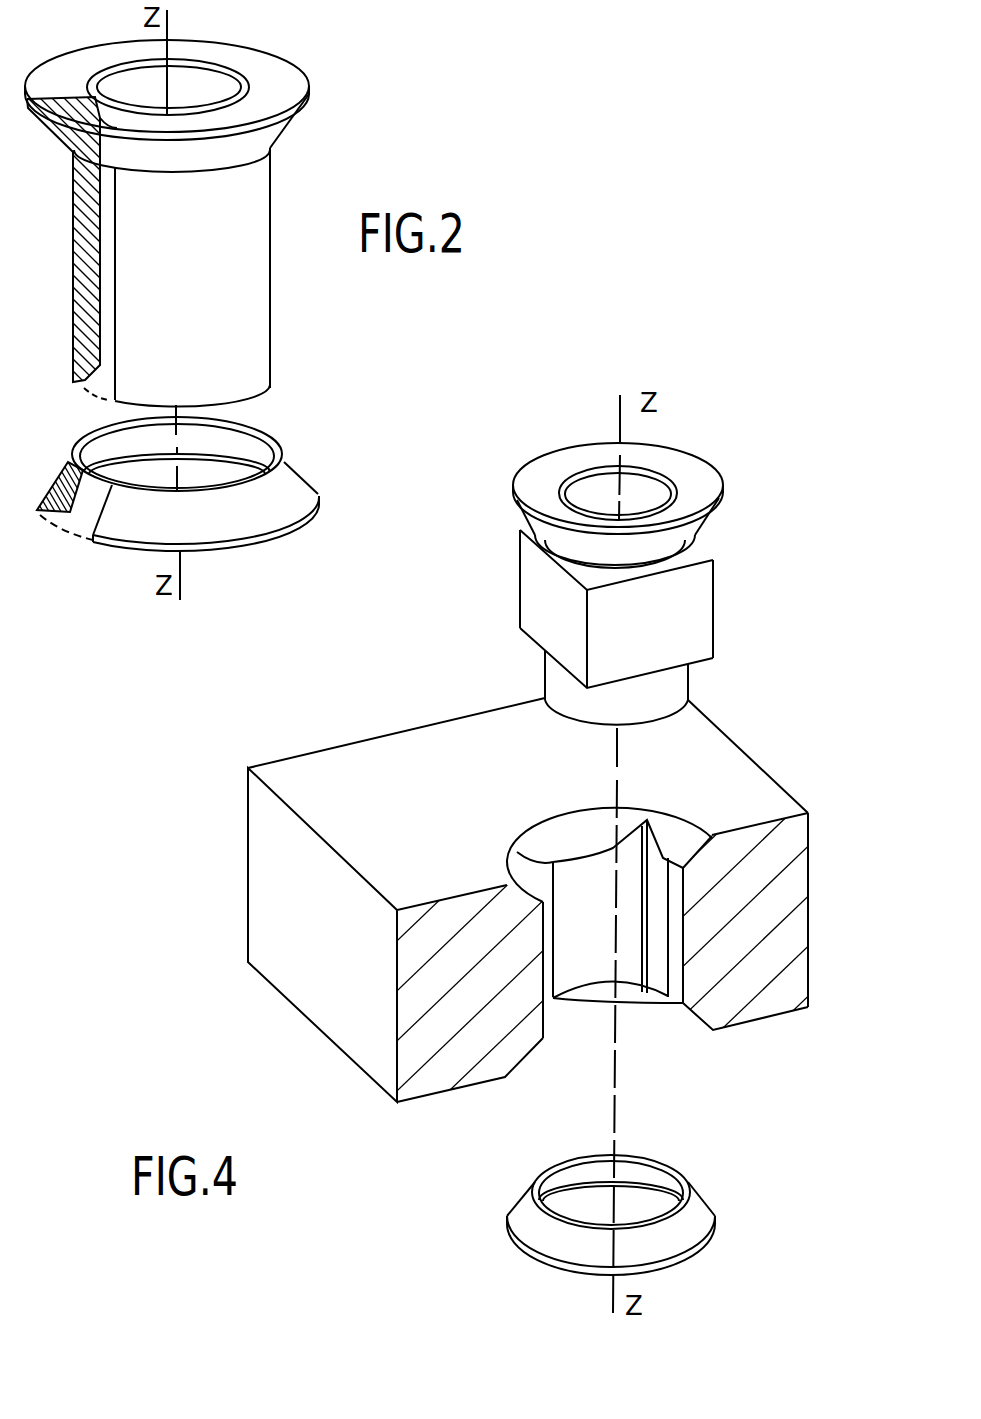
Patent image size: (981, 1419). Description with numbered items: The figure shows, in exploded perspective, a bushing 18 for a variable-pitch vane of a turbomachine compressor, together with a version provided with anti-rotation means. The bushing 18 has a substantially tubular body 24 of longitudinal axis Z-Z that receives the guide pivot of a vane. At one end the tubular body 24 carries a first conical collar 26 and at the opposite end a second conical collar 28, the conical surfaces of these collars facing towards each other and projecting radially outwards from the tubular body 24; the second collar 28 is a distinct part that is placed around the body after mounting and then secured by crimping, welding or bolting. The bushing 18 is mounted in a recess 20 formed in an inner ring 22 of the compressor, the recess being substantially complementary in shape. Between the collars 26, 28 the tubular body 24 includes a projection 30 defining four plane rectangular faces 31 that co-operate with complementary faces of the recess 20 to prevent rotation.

In FIG. 2, the bushing 18 is at (205, 207).
In FIG. 4, the bushing 18 is at (635, 554).
In FIG. 4, the recess 20 is at (563, 962).
In FIG. 4, the inner ring 22 is at (549, 937).
In FIG. 2, the tubular body 24 is at (233, 327).
In FIG. 4, the tubular body 24 is at (668, 682).
In FIG. 2, the first conical collar 26 is at (272, 80).
In FIG. 4, the first conical collar 26 is at (700, 495).
In FIG. 2, the second conical collar 28 is at (290, 477).
In FIG. 4, the second conical collar 28 is at (693, 1203).
In FIG. 4, the projection 30 is at (635, 609).
In FIG. 4, the plane surface 31 is at (603, 625).